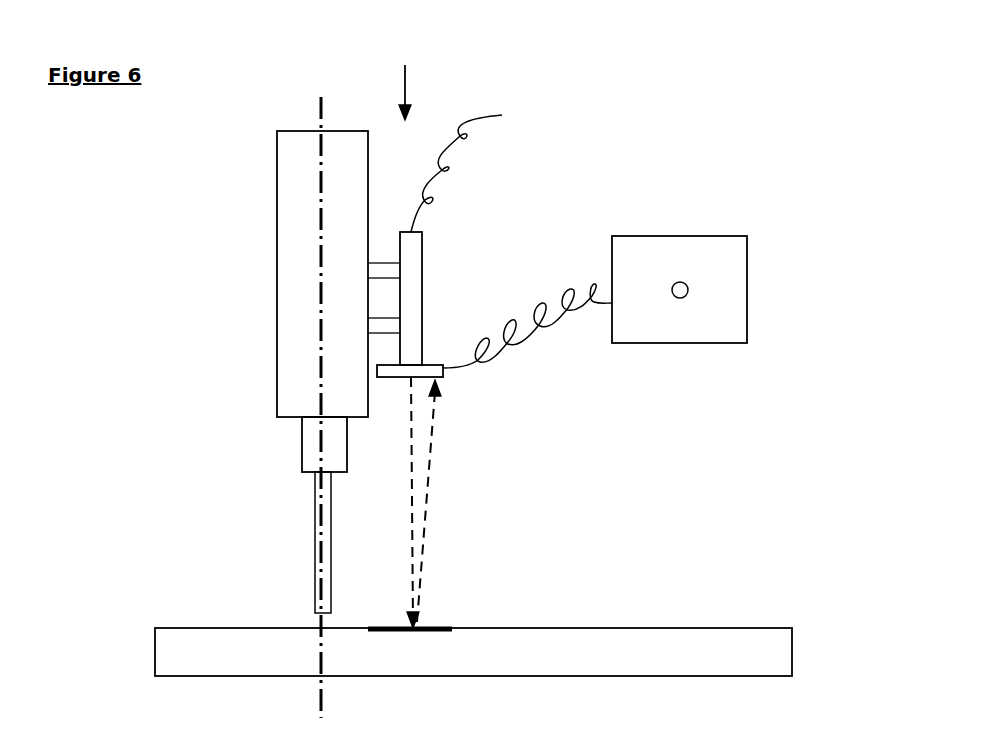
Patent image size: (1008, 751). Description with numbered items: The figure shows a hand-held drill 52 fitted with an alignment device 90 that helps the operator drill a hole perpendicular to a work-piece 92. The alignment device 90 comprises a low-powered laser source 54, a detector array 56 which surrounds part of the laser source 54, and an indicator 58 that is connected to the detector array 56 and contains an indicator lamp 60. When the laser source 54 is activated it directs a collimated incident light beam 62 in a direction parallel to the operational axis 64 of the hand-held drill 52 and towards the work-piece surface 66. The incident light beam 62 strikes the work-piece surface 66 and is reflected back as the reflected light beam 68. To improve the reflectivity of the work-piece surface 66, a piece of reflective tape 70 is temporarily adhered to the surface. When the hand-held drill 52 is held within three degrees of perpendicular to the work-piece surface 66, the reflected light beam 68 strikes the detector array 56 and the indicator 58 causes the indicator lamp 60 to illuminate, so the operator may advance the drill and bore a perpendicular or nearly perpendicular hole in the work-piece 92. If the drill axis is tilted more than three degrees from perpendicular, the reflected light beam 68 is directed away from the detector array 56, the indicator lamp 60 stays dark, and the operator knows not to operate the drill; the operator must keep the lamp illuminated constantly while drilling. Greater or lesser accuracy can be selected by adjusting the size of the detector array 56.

The hand-held drill 52 is at (277, 295).
The laser source 54 is at (422, 240).
The detector array 56 is at (432, 364).
The indicator 58 is at (673, 236).
The indicator lamp 60 is at (688, 290).
The incident light beam 62 is at (410, 492).
The operational axis 64 is at (314, 119).
The work-piece surface 66 is at (610, 628).
The reflected light beam 68 is at (430, 450).
The reflective tape 70 is at (433, 625).
The alignment device 90 is at (405, 82).
The work-piece 92 is at (795, 652).